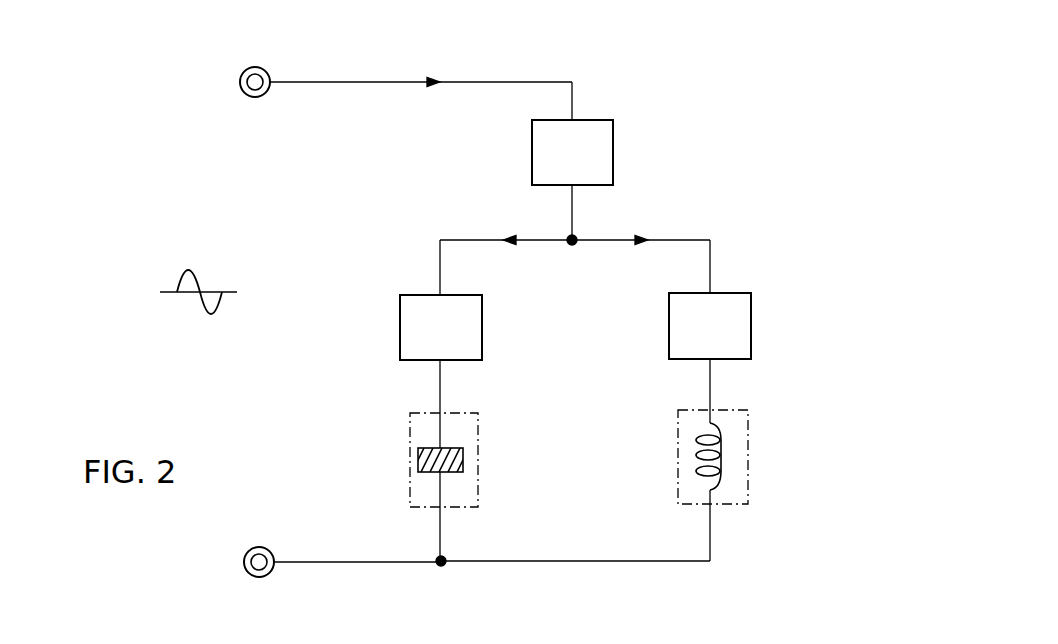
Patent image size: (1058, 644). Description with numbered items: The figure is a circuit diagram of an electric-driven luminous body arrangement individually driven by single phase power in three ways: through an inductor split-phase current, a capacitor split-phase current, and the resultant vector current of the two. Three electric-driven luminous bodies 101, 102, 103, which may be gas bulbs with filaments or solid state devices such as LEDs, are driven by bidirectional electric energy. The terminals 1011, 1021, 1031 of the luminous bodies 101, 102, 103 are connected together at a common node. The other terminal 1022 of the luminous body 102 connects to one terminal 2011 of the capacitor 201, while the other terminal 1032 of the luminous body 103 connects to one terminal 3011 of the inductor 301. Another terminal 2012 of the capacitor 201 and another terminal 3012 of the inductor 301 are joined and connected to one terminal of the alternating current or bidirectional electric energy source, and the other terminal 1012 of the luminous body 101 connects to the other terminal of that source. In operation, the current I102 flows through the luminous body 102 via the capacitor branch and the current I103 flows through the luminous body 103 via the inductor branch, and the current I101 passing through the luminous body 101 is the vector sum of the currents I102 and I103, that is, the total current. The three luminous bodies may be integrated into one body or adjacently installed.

The electric-driven luminous body 101 is at (572, 152).
The terminal of electric-driven luminous body 1011 is at (578, 189).
The other terminal of electric-driven luminous body 1012 is at (576, 116).
The electric-driven luminous body 102 is at (441, 327).
The terminal of electric-driven luminous body 1021 is at (437, 292).
The other terminal of electric-driven luminous body 1022 is at (437, 362).
The electric-driven luminous body 103 is at (710, 326).
The terminal of electric-driven luminous body 1031 is at (713, 290).
The other terminal of electric-driven luminous body 1032 is at (714, 364).
The capacitor 201 is at (480, 480).
The terminal of capacitor 2011 is at (447, 401).
The another terminal of capacitor 2012 is at (447, 513).
The inductor 301 is at (748, 478).
The terminal of inductor 3011 is at (703, 403).
The another terminal of inductor 3012 is at (705, 509).
The current I101 is at (421, 102).
The current I102 is at (506, 259).
The current I103 is at (641, 259).